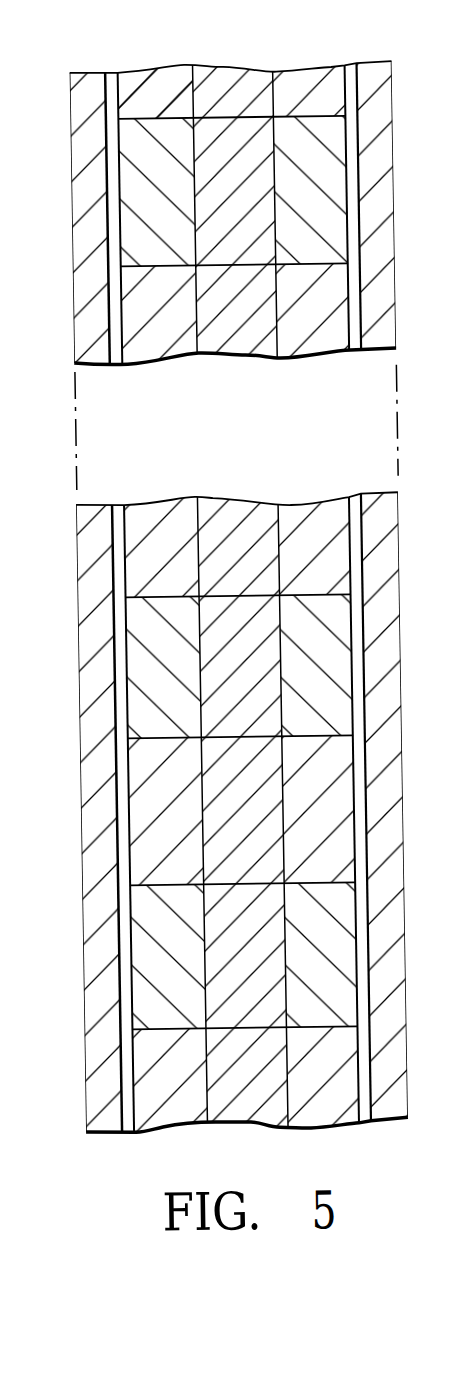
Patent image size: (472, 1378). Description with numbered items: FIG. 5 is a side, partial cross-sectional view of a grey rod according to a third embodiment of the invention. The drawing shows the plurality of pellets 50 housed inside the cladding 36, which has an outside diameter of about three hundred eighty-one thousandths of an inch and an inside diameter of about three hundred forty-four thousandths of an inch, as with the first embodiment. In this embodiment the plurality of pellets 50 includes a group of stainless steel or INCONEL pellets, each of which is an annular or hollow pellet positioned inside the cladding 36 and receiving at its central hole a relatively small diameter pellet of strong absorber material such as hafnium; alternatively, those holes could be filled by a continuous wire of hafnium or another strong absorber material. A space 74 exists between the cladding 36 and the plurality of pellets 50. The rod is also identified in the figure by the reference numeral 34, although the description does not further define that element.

The grey rod (first embodiment) 34 is at (210, 212).
The cladding 36 is at (84, 236).
The plurality of pellets 50 is at (213, 814).
The space 74 is at (110, 518).